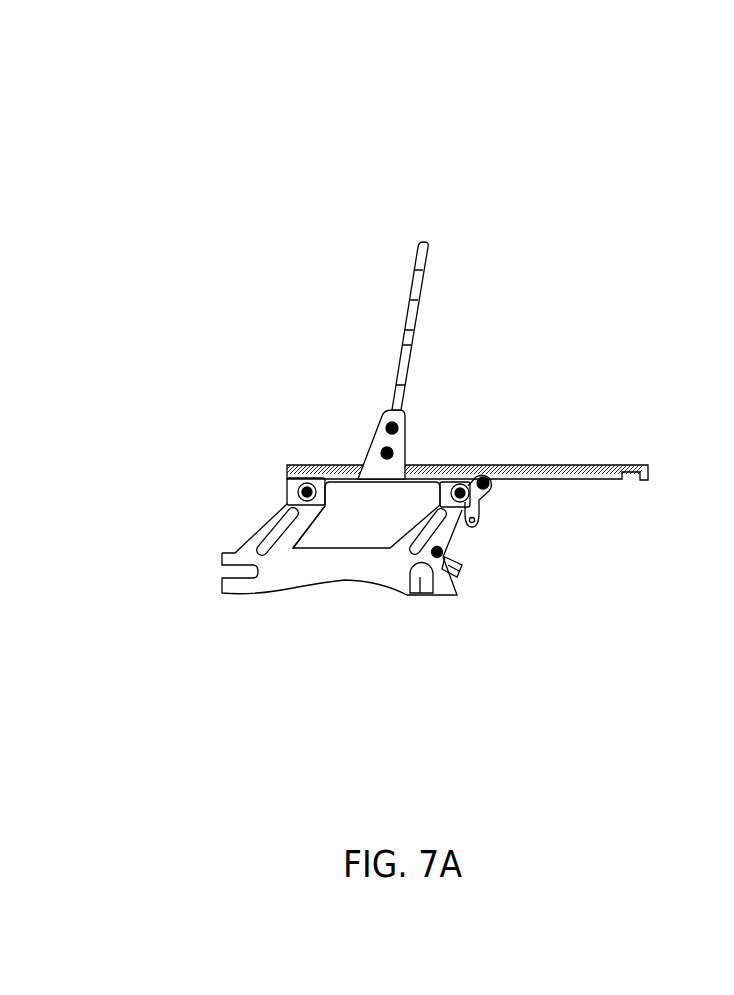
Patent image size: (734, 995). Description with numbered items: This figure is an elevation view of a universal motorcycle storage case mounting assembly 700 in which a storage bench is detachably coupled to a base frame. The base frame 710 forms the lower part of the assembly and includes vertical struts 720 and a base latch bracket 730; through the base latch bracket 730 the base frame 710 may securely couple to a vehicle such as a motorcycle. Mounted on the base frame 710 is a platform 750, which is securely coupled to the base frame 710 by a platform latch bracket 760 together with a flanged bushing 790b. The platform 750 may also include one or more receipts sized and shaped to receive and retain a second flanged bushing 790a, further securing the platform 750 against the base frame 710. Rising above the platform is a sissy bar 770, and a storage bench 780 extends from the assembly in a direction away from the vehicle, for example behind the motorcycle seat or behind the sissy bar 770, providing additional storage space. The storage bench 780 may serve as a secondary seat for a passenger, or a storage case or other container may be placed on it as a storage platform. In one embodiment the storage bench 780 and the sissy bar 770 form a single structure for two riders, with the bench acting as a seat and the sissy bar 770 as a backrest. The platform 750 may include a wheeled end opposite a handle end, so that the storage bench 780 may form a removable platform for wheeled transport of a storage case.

The universal motorcycle storage case mounting assembly 700 is at (426, 46).
The base frame 710 is at (323, 570).
The vertical struts 720 is at (257, 533).
The base latch bracket 730 is at (465, 561).
The platform 750 is at (338, 472).
The platform latch bracket 760 is at (480, 496).
The sissy bar 770 is at (417, 253).
The storage bench 780 is at (585, 473).
The flanged bushing 790a is at (290, 473).
The flanged bushing 790b is at (462, 485).